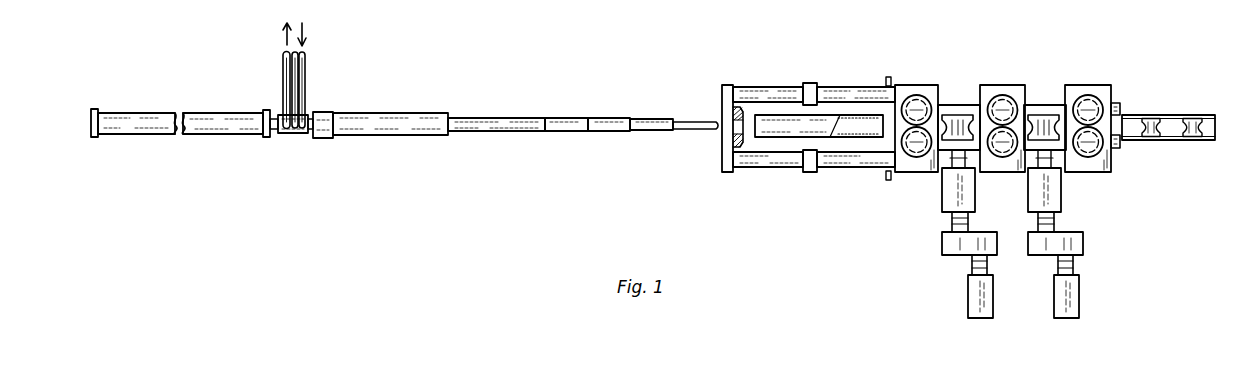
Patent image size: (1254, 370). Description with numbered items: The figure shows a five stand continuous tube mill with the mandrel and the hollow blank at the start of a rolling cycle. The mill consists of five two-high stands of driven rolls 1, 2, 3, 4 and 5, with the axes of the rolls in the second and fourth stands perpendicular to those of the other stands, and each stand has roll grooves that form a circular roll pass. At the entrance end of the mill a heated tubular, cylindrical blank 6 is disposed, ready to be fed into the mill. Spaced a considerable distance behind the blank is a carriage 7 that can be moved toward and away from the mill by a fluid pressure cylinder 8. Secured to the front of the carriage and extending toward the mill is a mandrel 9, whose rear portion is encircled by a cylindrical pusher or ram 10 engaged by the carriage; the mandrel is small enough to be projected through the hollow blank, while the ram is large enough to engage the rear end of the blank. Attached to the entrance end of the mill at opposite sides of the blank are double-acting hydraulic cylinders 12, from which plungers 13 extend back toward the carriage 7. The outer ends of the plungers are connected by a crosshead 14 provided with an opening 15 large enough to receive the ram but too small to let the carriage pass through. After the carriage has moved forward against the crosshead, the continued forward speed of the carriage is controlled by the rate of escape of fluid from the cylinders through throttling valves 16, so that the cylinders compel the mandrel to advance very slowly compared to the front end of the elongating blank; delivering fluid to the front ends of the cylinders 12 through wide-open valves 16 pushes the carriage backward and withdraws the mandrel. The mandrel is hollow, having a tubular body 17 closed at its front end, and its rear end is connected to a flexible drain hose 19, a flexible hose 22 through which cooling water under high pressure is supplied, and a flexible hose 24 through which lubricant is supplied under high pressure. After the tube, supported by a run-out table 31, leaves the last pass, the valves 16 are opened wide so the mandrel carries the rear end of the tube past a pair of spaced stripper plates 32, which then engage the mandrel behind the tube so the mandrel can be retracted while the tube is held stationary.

The first roll stand 1 is at (920, 86).
The second roll stand 2 is at (950, 104).
The third roll stand 3 is at (994, 86).
The fourth roll stand 4 is at (1036, 104).
The fifth roll stand 5 is at (1076, 86).
The tubular cylindrical blank 6 is at (780, 116).
The carriage 7 is at (323, 114).
The fluid pressure cylinder 8 is at (200, 116).
The mandrel 9 is at (518, 116).
The cylindrical pusher or ram 10 is at (392, 115).
The double-acting hydraulic cylinders 12 is at (853, 89).
The plungers 13 is at (752, 90).
The crosshead 14 is at (724, 92).
The opening 15 is at (722, 131).
The throttling valves 16 is at (889, 78).
The tubular mandrel body 17 is at (541, 128).
The flexible drain hose 19 is at (283, 73).
The flexible hose for cooling water 22 is at (304, 75).
The flexible lubricant hose 24 is at (299, 56).
The run-out table 31 is at (1173, 115).
The stripper plates 32 is at (1118, 106).